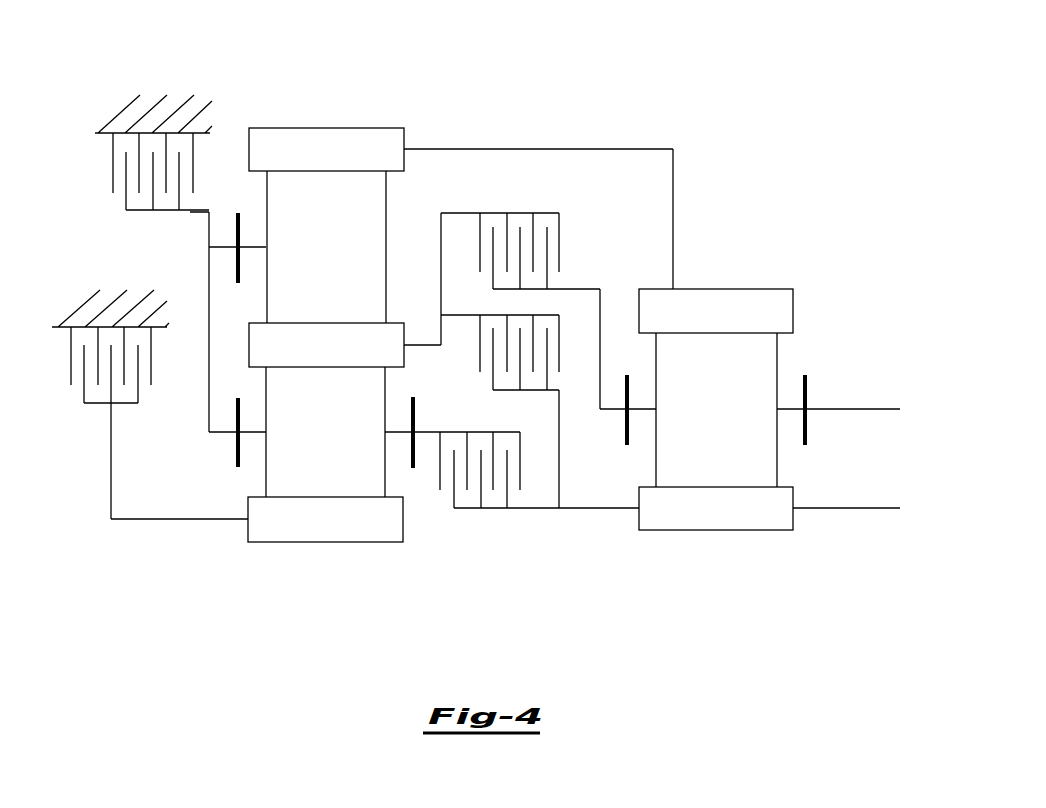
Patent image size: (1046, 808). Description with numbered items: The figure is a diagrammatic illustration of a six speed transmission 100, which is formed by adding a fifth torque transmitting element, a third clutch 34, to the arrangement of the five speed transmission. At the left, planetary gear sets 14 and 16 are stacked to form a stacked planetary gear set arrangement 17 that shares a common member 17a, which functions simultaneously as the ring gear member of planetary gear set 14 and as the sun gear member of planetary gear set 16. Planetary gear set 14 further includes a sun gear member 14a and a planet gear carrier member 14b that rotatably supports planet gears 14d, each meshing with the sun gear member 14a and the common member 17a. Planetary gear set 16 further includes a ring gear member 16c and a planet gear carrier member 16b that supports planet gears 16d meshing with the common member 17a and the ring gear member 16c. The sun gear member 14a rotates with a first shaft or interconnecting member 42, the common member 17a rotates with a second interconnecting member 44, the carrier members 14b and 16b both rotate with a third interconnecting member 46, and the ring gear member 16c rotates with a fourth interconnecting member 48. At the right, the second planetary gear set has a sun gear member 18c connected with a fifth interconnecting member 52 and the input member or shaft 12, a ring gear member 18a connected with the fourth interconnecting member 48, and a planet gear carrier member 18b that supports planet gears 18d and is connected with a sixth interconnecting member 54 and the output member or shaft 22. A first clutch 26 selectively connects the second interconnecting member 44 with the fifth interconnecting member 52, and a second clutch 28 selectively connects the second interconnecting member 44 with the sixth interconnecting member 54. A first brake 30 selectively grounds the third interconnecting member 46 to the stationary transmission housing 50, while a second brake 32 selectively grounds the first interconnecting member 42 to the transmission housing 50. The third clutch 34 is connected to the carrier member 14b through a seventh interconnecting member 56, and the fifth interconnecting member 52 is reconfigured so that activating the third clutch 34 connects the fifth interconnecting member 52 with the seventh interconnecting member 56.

The six speed transmission 100 is at (692, 106).
The input member or shaft 12 is at (829, 506).
The output member or shaft 22 is at (893, 412).
The planetary gear set 14 is at (278, 558).
The sun gear member 14a is at (248, 528).
The planet gear carrier member 14b is at (236, 445).
The planet gears 14d is at (266, 476).
The planetary gear set 16 is at (356, 113).
The planet gear carrier member 16b is at (236, 269).
The ring gear member 16c is at (404, 137).
The planet gears 16d is at (386, 196).
The stacked planetary gear set arrangement 17 is at (341, 552).
The common member 17a is at (248, 342).
The ring gear member 18a is at (793, 307).
The planet gear carrier member 18b is at (626, 427).
The sun gear member 18c is at (793, 515).
The planet gears 18d is at (777, 343).
The first clutch 26 is at (480, 353).
The second clutch 28 is at (559, 237).
The first brake 30 is at (113, 158).
The second brake 32 is at (71, 358).
The third clutch 34 is at (520, 478).
The first shaft or interconnecting member 42 is at (111, 466).
The second shaft or interconnecting member 44 is at (427, 343).
The third shaft or interconnecting member 46 is at (209, 407).
The fourth shaft or interconnecting member 48 is at (571, 148).
The transmission housing 50 is at (98, 132).
The fifth shaft or interconnecting member 52 is at (570, 510).
The sixth shaft or interconnecting member 54 is at (600, 313).
The seventh interconnecting member or shaft 56 is at (427, 431).